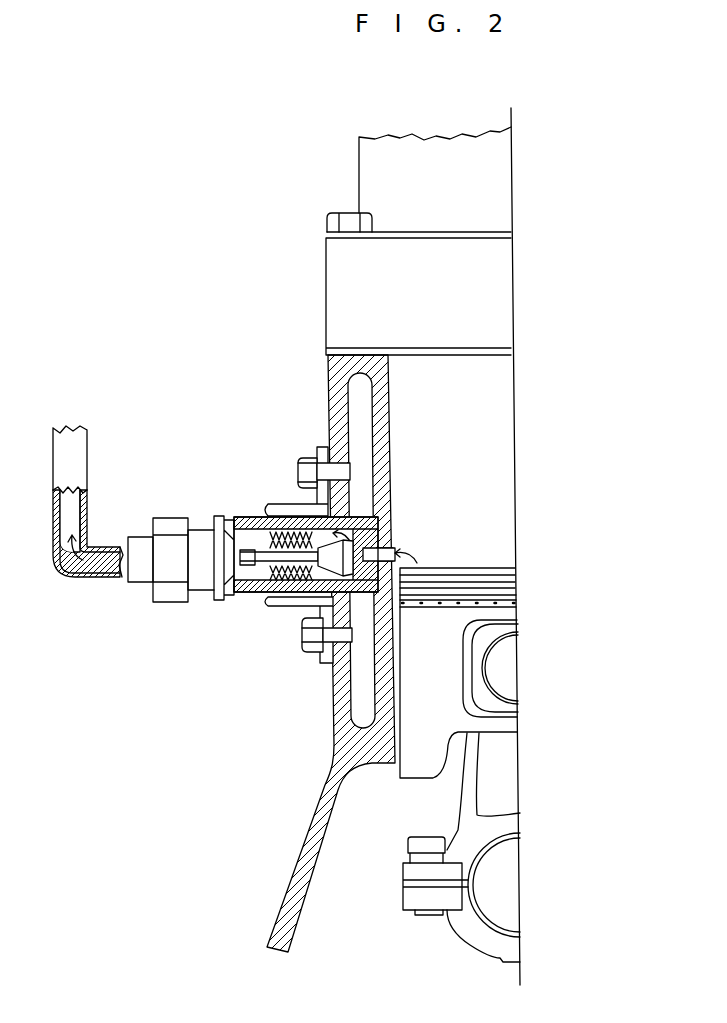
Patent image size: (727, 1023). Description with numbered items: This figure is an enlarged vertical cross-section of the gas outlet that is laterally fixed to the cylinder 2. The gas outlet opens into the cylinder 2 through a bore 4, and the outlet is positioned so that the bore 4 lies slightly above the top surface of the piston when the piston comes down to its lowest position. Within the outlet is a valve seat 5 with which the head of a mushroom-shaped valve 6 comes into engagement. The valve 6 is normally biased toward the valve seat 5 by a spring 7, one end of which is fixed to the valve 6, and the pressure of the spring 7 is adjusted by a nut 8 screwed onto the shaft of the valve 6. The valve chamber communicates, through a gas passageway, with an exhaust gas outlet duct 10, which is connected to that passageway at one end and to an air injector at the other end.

The cylinder 2 is at (335, 376).
The bore 4 is at (392, 540).
The valve seat 5 is at (317, 605).
The mushroom-shaped valve 6 is at (328, 548).
The spring 7 is at (278, 523).
The nut 8 is at (245, 597).
The exhaust gas outlet duct 10 is at (77, 465).